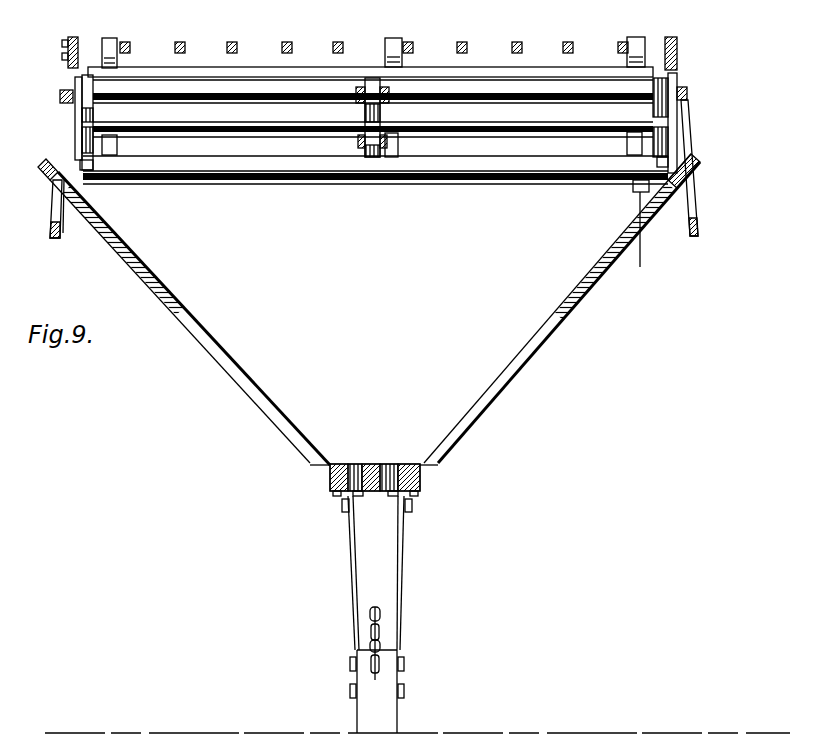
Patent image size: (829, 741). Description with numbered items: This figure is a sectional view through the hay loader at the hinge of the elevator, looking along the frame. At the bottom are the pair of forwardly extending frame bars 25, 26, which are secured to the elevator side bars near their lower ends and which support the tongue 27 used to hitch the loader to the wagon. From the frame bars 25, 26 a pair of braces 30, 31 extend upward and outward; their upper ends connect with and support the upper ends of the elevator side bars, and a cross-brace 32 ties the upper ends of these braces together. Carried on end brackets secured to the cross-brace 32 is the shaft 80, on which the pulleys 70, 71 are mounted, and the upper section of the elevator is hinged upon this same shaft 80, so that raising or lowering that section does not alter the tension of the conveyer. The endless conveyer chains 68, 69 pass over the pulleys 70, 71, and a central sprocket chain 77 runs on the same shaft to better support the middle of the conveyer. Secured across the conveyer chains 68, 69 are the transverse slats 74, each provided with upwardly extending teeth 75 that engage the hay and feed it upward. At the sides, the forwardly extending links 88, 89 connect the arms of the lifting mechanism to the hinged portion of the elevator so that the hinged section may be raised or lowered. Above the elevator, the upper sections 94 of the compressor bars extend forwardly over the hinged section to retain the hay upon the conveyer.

The frame bar 25 is at (420, 482).
The frame bar 26 is at (332, 483).
The tongue 27 is at (375, 470).
The brace 30 is at (495, 397).
The brace 31 is at (256, 373).
The cross-brace 32 is at (292, 184).
The endless conveyer chain 68 is at (86, 76).
The endless conveyer chain 69 is at (660, 70).
The pulley 70 is at (93, 113).
The pulley 71 is at (663, 92).
The transverse slat 74 is at (312, 78).
The tooth 75 is at (112, 42).
The sprocket chain 77 is at (367, 78).
The shaft 80 is at (497, 100).
The link 88 is at (58, 238).
The link 89 is at (697, 218).
The upper section of compressor bar 94 is at (285, 43).